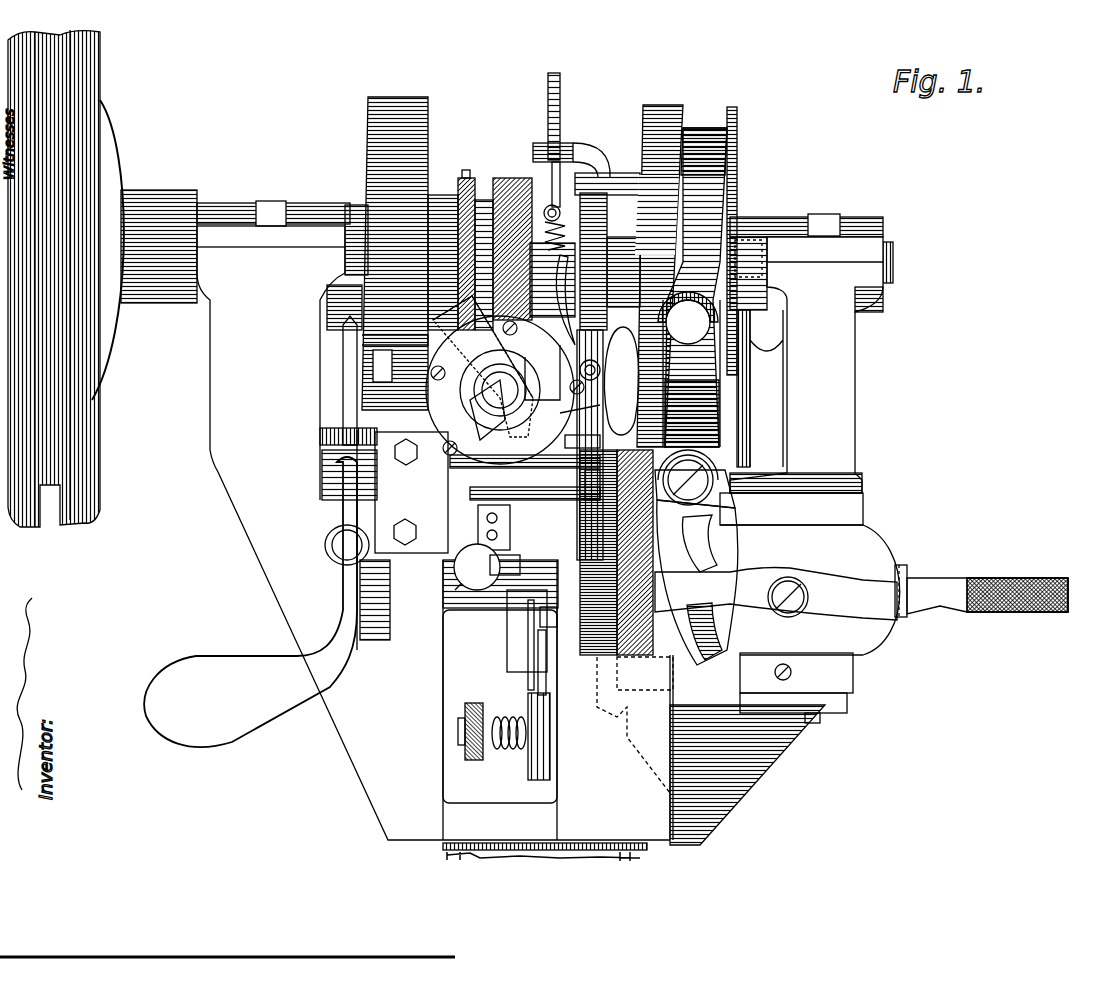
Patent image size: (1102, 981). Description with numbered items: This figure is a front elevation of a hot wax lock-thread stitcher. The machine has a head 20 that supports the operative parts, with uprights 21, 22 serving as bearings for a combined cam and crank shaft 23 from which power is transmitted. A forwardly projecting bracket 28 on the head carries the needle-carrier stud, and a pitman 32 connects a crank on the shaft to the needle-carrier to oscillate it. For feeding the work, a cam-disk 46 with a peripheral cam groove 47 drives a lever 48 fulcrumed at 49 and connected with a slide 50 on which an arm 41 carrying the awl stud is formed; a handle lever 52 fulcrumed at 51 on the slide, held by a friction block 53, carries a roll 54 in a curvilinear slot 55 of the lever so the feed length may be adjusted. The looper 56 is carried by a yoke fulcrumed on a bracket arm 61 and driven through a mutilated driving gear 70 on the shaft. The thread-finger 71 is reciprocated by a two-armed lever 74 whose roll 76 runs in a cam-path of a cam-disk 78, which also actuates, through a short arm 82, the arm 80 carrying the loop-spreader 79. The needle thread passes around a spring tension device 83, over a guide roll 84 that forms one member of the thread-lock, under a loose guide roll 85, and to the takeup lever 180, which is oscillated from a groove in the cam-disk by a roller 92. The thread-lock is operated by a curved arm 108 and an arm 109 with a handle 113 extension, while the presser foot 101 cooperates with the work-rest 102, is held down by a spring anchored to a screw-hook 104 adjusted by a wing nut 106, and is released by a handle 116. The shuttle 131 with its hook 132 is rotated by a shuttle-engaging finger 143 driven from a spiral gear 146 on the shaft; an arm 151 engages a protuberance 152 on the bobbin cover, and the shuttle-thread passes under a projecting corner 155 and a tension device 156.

The head 20 is at (591, 645).
The upright 21 is at (433, 533).
The upright 22 is at (806, 353).
The combined cam and crank shaft 23 is at (893, 258).
The bracket 28 is at (490, 480).
The pitman 32 is at (552, 285).
The arm 41 is at (645, 673).
The cam-disk 46 is at (663, 105).
The peripheral cam groove 47 is at (705, 128).
The lever 48 is at (715, 437).
The fulcrum 49 is at (688, 477).
The slide 50 is at (810, 574).
The fulcrum 51 is at (795, 582).
The handle lever 52 is at (982, 566).
The friction block 53 is at (905, 566).
The roll 54 is at (776, 594).
The curvilinear slot 55 is at (730, 640).
The looper 56 is at (560, 537).
The bracket arm 61 is at (497, 573).
The driving gear 70 is at (465, 178).
The thread-finger 71 is at (477, 567).
The two-armed lever 74 is at (430, 305).
The roll 76 is at (427, 268).
The cam-disk 78 is at (405, 97).
The loop-spreader 79 is at (560, 413).
The arm 80 is at (596, 300).
The short arm 82 is at (383, 367).
The spring tension device 83 is at (492, 738).
The guide roll 84 is at (528, 663).
The loose guide roll 85 is at (528, 682).
The roller 92 is at (633, 173).
The presser foot 101 is at (587, 473).
The work-rest 102 is at (605, 445).
The screw-hook 104 is at (553, 78).
The wing nut 106 is at (566, 143).
The curved arm 108 is at (507, 632).
The arm 109 is at (345, 358).
The handle 113 is at (256, 602).
The handle 116 is at (621, 381).
The shuttle 131 is at (500, 390).
The hook 132 is at (502, 388).
The shuttle-engaging finger 143 is at (544, 372).
The spiral gear 146 is at (514, 178).
The arm 151 is at (480, 377).
The protuberance 152 is at (525, 477).
The projecting corner 155 is at (473, 408).
The tension device 156 is at (487, 447).
The takeup lever 180 is at (540, 618).